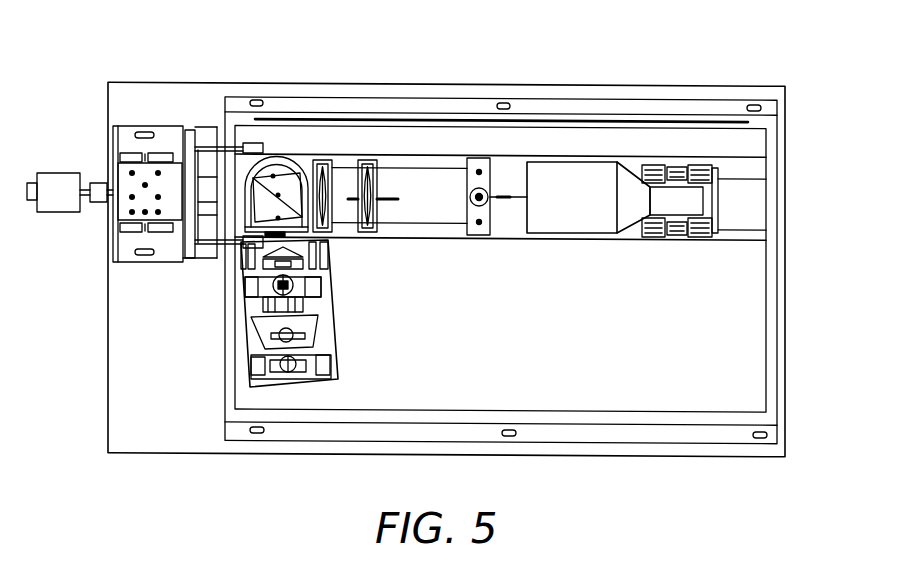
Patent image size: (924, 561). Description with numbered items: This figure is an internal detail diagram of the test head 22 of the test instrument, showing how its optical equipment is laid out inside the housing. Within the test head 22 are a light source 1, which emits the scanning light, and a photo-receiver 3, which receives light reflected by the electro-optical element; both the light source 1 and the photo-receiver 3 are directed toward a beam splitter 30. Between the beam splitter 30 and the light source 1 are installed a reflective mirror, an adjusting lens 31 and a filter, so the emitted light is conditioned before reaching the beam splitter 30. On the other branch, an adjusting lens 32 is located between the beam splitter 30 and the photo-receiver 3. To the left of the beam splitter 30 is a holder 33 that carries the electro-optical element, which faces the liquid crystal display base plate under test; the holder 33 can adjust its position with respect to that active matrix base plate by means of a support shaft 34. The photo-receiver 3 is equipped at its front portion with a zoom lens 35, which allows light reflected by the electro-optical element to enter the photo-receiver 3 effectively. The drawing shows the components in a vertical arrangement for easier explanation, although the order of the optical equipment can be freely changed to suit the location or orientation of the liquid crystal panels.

The light source 1 is at (320, 382).
The photo-receiver 3 is at (680, 225).
The test head 22 is at (474, 84).
The beam splitter 30 is at (296, 135).
The adjusting lens 31 is at (307, 268).
The adjusting lens 32 is at (408, 272).
The holder 33 is at (166, 148).
The support shaft 34 is at (220, 172).
The zoom lens 35 is at (558, 223).